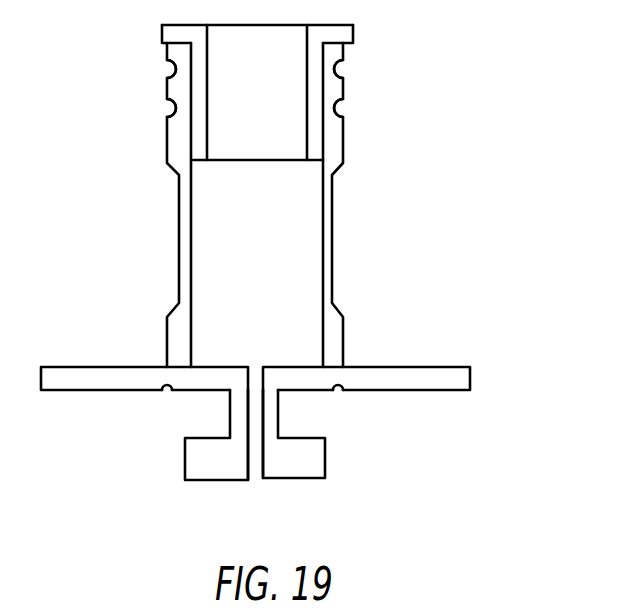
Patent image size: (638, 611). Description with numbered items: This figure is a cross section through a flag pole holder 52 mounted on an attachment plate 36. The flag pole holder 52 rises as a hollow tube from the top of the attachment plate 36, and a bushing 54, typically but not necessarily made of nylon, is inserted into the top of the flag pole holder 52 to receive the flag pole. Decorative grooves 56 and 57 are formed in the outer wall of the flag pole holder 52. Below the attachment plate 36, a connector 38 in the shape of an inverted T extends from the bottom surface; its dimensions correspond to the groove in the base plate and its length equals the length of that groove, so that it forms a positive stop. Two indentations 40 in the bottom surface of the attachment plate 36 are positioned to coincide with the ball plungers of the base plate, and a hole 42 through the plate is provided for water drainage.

The attachment plate 36 is at (458, 380).
The connector 38 is at (302, 460).
The indentations 40 is at (167, 392).
The hole 42 is at (257, 470).
The flag pole holder 52 is at (331, 145).
The bushing 54 is at (178, 33).
The decorative groove 56 is at (338, 68).
The decorative groove 57 is at (333, 232).